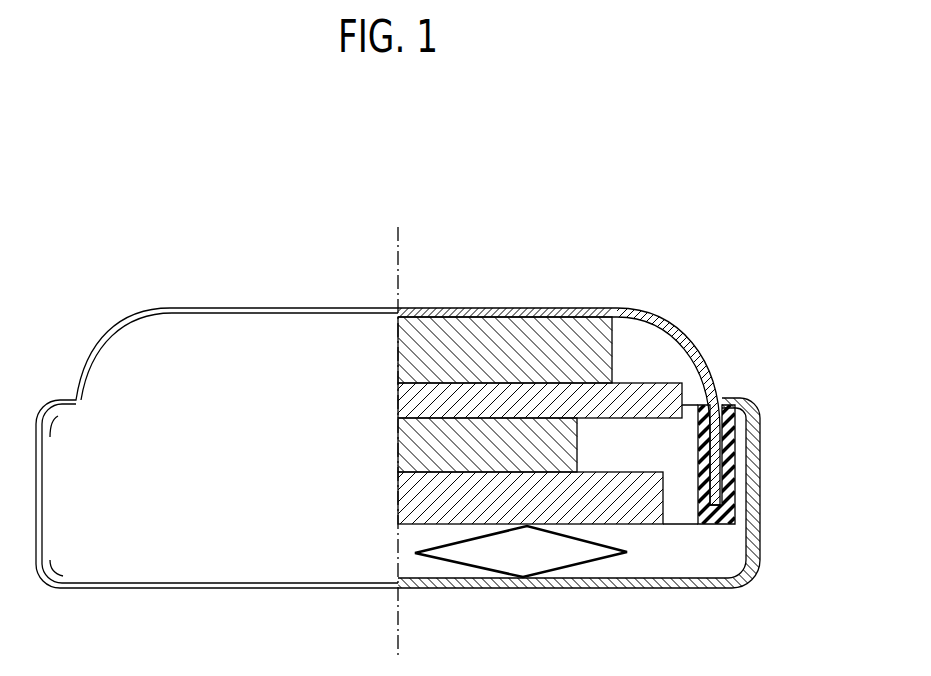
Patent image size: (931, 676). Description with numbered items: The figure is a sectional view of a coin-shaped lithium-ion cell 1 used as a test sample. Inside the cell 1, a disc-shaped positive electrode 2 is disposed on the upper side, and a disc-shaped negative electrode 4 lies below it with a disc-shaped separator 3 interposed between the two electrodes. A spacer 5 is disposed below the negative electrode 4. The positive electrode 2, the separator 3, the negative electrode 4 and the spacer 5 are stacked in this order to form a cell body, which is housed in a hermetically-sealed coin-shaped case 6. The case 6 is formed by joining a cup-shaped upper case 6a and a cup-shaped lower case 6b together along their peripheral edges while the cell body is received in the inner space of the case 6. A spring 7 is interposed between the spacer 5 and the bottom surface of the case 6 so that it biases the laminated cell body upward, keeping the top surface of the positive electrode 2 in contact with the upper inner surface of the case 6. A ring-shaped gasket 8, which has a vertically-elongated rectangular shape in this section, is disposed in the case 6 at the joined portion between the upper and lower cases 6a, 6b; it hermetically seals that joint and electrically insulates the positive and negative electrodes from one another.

The lithium-ion cell 1 is at (298, 305).
The positive electrode 2 is at (445, 340).
The separator 3 is at (520, 405).
The negative electrode 4 is at (437, 440).
The spacer 5 is at (615, 502).
The case 6 is at (626, 448).
The upper case 6a is at (708, 362).
The lower case 6b is at (608, 493).
The spring 7 is at (530, 550).
The gasket 8 is at (732, 525).